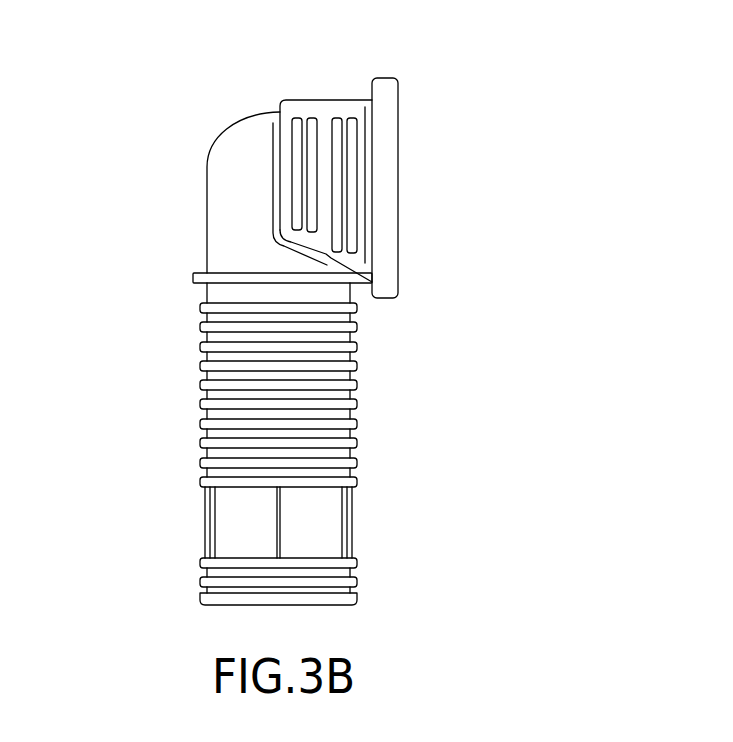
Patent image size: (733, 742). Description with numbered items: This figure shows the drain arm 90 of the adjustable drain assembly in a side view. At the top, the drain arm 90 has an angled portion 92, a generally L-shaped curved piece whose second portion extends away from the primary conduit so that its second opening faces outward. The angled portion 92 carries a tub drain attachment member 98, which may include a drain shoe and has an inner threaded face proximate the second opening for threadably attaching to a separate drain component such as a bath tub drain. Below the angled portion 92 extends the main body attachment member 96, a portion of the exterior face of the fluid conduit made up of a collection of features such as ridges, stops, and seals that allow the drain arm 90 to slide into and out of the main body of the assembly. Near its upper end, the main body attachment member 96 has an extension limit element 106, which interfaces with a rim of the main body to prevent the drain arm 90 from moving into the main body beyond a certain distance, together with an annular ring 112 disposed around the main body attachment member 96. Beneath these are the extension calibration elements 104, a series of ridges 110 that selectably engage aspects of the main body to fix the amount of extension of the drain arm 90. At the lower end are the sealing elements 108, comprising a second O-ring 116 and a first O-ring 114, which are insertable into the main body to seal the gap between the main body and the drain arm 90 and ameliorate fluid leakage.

The drain arm 90 is at (548, 105).
The angled portion 92 is at (225, 158).
The tub drain attachment member 98 is at (403, 120).
The main body attachment member 96 is at (63, 268).
The extension limit element 106 is at (193, 282).
The annular ring 112 is at (282, 278).
The extension calibration elements 104 is at (132, 328).
The ridges 110 is at (203, 347).
The sealing elements 108 is at (127, 532).
The second O-ring 116 is at (203, 562).
The first O-ring 114 is at (203, 582).